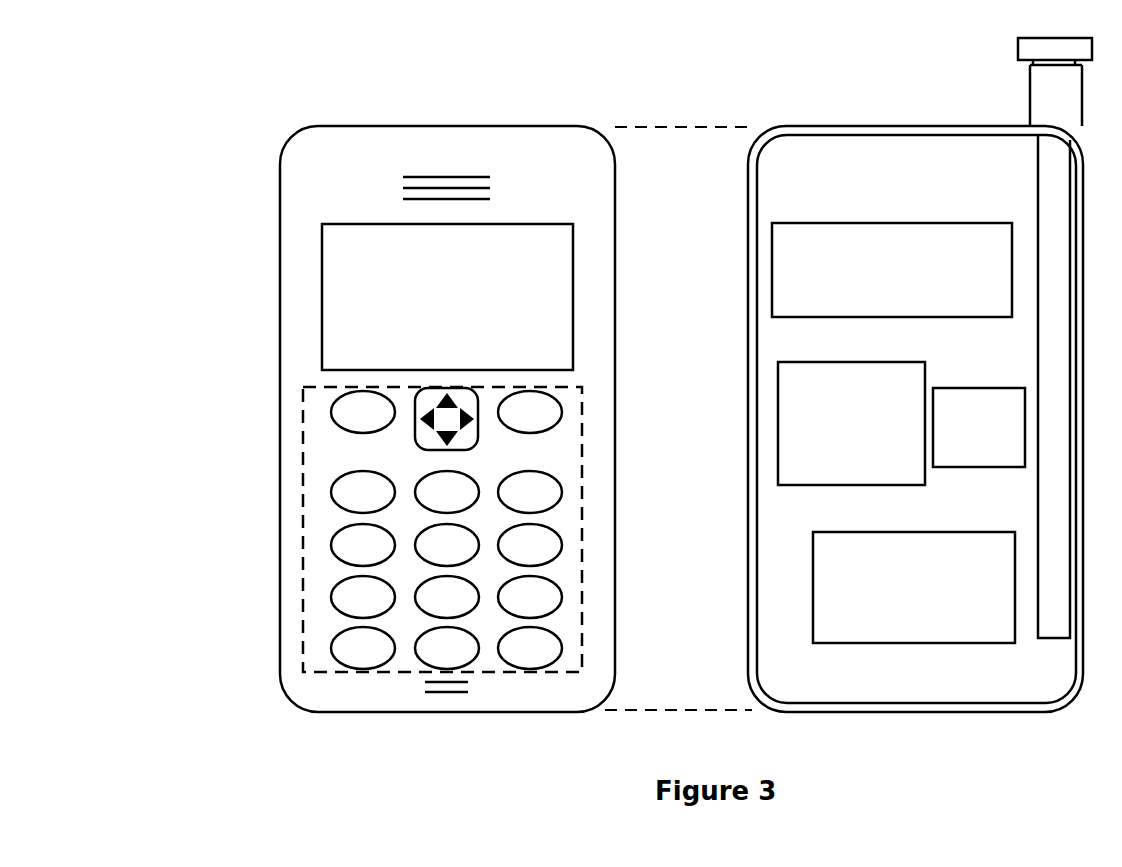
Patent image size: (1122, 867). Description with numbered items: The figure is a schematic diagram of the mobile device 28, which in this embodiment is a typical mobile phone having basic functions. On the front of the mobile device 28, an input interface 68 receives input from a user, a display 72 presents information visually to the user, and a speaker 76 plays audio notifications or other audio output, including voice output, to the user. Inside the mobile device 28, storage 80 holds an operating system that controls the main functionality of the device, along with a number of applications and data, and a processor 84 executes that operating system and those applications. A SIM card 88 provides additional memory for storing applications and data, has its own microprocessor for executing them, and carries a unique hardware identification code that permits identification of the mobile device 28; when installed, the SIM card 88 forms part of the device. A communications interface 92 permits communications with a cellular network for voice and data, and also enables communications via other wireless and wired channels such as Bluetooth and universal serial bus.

The mobile device 28 is at (262, 120).
The speaker 76 is at (436, 152).
The display 72 is at (362, 310).
The input interface 68 is at (302, 523).
The storage 80 is at (892, 270).
The processor 84 is at (851, 423).
The SIM card 88 is at (979, 427).
The communications interface 92 is at (914, 587).